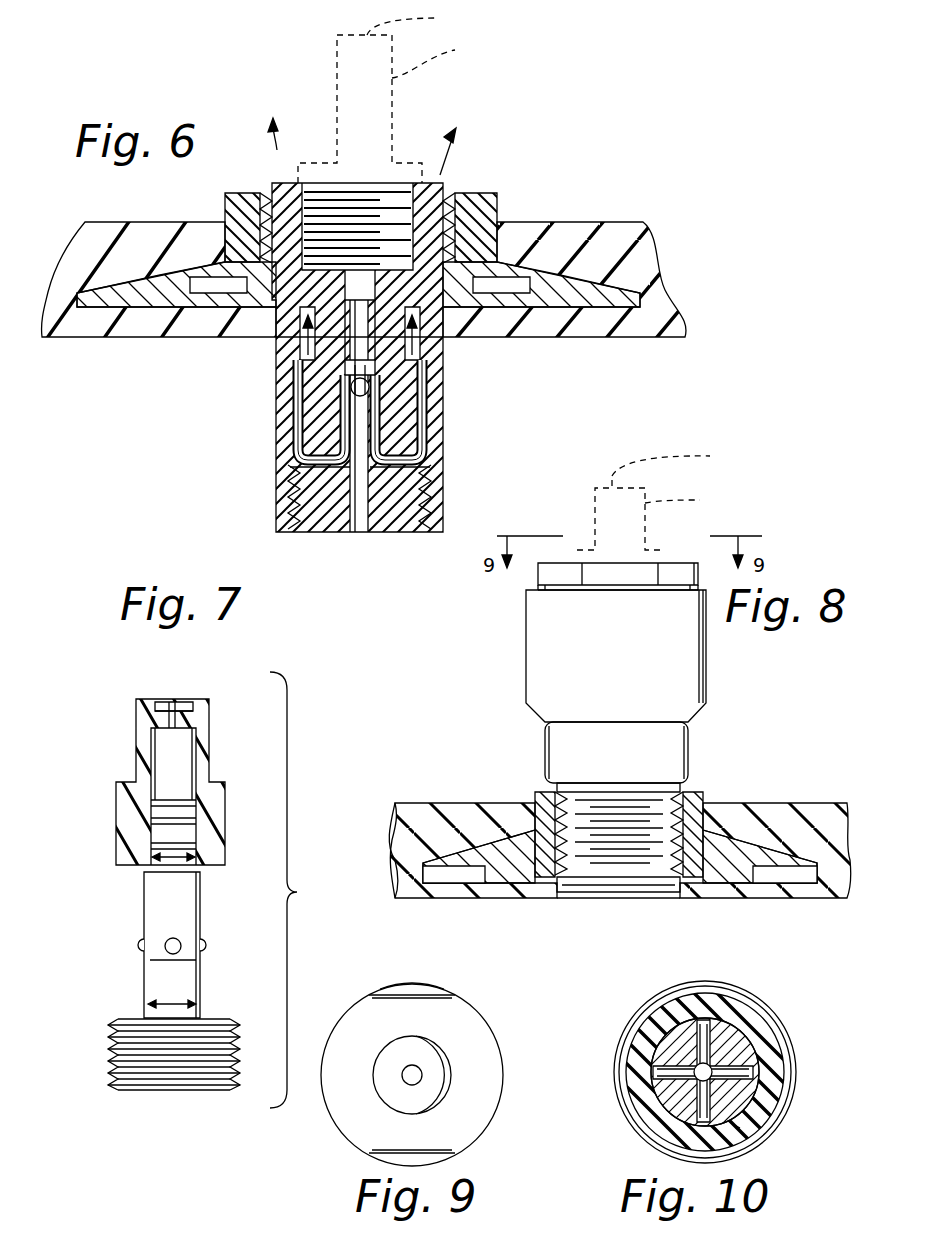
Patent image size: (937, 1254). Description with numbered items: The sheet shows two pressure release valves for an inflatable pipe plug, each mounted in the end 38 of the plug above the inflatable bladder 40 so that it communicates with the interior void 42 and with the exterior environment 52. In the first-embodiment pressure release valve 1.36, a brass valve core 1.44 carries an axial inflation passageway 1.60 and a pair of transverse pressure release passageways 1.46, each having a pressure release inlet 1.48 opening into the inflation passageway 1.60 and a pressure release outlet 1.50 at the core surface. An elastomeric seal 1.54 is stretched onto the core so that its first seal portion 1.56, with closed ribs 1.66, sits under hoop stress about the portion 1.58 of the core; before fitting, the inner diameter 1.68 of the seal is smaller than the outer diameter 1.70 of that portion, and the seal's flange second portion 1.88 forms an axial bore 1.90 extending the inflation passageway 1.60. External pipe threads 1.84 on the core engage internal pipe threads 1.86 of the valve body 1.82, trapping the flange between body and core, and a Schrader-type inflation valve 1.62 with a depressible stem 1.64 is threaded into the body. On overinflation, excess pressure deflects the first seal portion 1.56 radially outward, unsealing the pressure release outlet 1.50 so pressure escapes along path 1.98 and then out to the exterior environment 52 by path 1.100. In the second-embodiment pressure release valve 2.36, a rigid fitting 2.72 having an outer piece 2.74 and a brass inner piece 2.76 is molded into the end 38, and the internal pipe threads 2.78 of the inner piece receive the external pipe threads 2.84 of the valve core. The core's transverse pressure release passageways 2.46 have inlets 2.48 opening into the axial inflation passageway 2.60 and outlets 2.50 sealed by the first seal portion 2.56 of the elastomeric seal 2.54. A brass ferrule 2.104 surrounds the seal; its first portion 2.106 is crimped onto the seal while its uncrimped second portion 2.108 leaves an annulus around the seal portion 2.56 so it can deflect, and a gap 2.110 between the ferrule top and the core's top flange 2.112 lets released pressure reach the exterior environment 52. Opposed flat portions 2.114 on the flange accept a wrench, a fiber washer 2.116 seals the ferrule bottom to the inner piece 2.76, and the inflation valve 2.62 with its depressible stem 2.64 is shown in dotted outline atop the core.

In FIG. 6, the end of the plug 38 is at (588, 240).
In FIG. 8, the end of the plug 38 is at (770, 812).
In FIG. 6, the inflatable bladder 40 is at (665, 322).
In FIG. 8, the inflatable bladder 40 is at (752, 892).
In FIG. 6, the interior void 42 is at (177, 398).
In FIG. 8, the interior void 42 is at (517, 920).
In FIG. 6, the exterior environment 52 is at (512, 103).
In FIG. 8, the exterior environment 52 is at (684, 528).
In FIG. 6, the pressure release valve 1.36 is at (492, 395).
In FIG. 6, the valve core 1.44 is at (312, 528).
In FIG. 7, the valve core 1.44 is at (155, 990).
In FIG. 6, the pressure release passageway 1.46 is at (425, 456).
In FIG. 7, the pressure release passageway 1.46 is at (170, 936).
In FIG. 6, the pressure release inlet 1.48 is at (420, 463).
In FIG. 6, the pressure release outlet 1.50 is at (305, 350).
In FIG. 7, the pressure release outlet 1.50 is at (200, 940).
In FIG. 7, the elastomeric seal 1.54 is at (86, 784).
In FIG. 6, the first seal portion 1.56 is at (440, 402).
In FIG. 7, the first seal portion 1.56 is at (125, 835).
In FIG. 6, the portion of the valve core 1.58 is at (320, 445).
In FIG. 7, the portion of the valve core 1.58 is at (150, 972).
In FIG. 6, the inflation passageway 1.60 is at (375, 488).
In FIG. 6, the inflation valve 1.62 is at (445, 58).
In FIG. 6, the depressible stem 1.64 is at (426, 21).
In FIG. 7, the closed ribs 1.66 is at (196, 802).
In FIG. 7, the inner diameter of first seal portion 1.68 is at (175, 850).
In FIG. 7, the outer diameter of valve core portion 1.70 is at (175, 995).
In FIG. 6, the valve body 1.82 is at (462, 185).
In FIG. 6, the external pipe threads 1.84 is at (432, 476).
In FIG. 7, the external pipe threads 1.84 is at (130, 1055).
In FIG. 6, the internal pipe threads 1.86 is at (290, 514).
In FIG. 6, the flange second portion 1.88 is at (375, 195).
In FIG. 7, the flange second portion 1.88 is at (180, 705).
In FIG. 6, the axial bore 1.90 is at (333, 200).
In FIG. 7, the axial bore 1.90 is at (172, 705).
In FIG. 6, the escape path 1.98 is at (440, 370).
In FIG. 6, the exit path 1.100 is at (450, 155).
In FIG. 8, the pressure release valve 2.36 is at (726, 733).
In FIG. 9, the pressure release valve 2.36 is at (465, 994).
In FIG. 10, the pressure release valve 2.36 is at (743, 980).
In FIG. 10, the pressure release passageway 2.46 is at (760, 1115).
In FIG. 10, the pressure release inlet 2.48 is at (745, 1015).
In FIG. 10, the pressure release outlet 2.50 is at (705, 1020).
In FIG. 10, the elastomeric seal 2.54 is at (740, 1130).
In FIG. 10, the first seal portion 2.56 is at (758, 1045).
In FIG. 9, the inflation passageway 2.60 is at (414, 1068).
In FIG. 10, the inflation passageway 2.60 is at (715, 1070).
In FIG. 8, the inflation valve 2.62 is at (696, 500).
In FIG. 8, the depressible stem 2.64 is at (665, 497).
In FIG. 8, the rigid fitting 2.72 is at (825, 830).
In FIG. 8, the outer piece 2.74 is at (700, 812).
In FIG. 8, the inner piece 2.76 is at (520, 860).
In FIG. 8, the internal pipe threads 2.78 is at (575, 815).
In FIG. 8, the external pipe threads 2.84 is at (620, 870).
In FIG. 8, the ferrule 2.104 is at (540, 655).
In FIG. 8, the first portion of ferrule 2.106 is at (545, 748).
In FIG. 8, the second portion of ferrule 2.108 is at (695, 652).
In FIG. 8, the gap 2.110 is at (535, 588).
In FIG. 8, the top flange 2.112 is at (560, 575).
In FIG. 9, the top flange 2.112 is at (342, 1063).
In FIG. 8, the flat portions 2.114 is at (615, 573).
In FIG. 9, the flat portions 2.114 is at (412, 995).
In FIG. 8, the fiber washer 2.116 is at (555, 785).